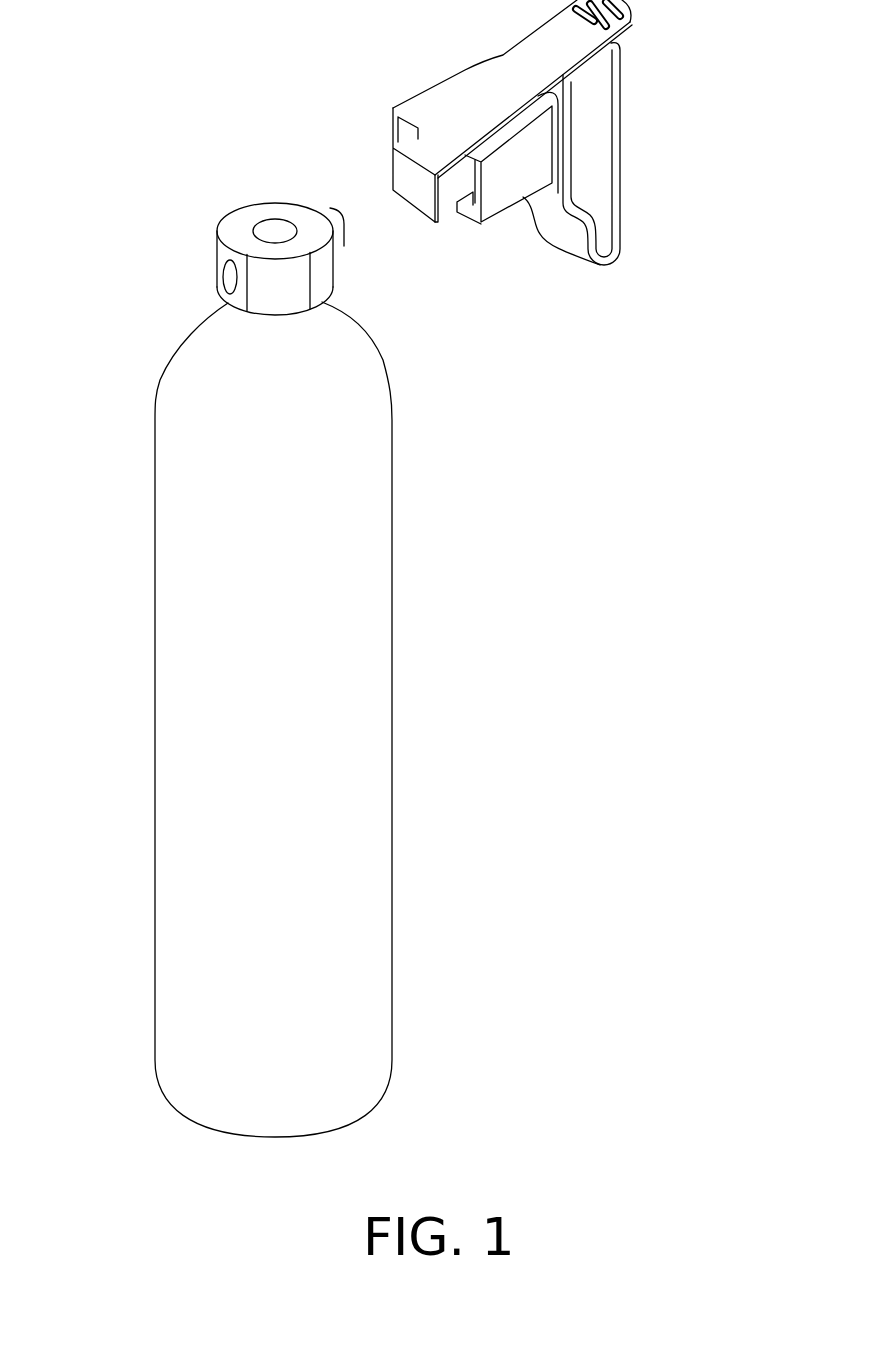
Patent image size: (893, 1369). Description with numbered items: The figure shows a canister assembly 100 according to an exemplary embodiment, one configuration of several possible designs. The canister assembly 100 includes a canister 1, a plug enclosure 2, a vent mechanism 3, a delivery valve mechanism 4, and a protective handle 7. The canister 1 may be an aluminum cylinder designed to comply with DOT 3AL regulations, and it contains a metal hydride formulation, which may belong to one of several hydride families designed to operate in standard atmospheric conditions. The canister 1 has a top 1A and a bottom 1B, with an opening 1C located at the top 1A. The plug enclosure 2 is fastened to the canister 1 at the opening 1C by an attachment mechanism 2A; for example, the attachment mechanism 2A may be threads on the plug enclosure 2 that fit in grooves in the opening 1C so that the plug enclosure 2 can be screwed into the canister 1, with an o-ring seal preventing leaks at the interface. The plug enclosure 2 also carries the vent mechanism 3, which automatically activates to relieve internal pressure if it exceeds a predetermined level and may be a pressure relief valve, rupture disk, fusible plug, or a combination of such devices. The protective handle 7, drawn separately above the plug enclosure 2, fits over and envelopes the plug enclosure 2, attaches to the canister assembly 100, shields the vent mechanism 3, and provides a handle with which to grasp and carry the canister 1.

The canister 1 is at (353, 712).
The top 1A is at (196, 311).
The bottom 1B is at (196, 1150).
The opening 1C is at (188, 238).
The plug enclosure 2 is at (268, 212).
The attachment mechanism 2A is at (330, 297).
The vent mechanism 3 is at (337, 207).
The delivery valve mechanism 4 is at (230, 275).
The protective handle 7 is at (621, 133).
The canister assembly 100 is at (742, 0).